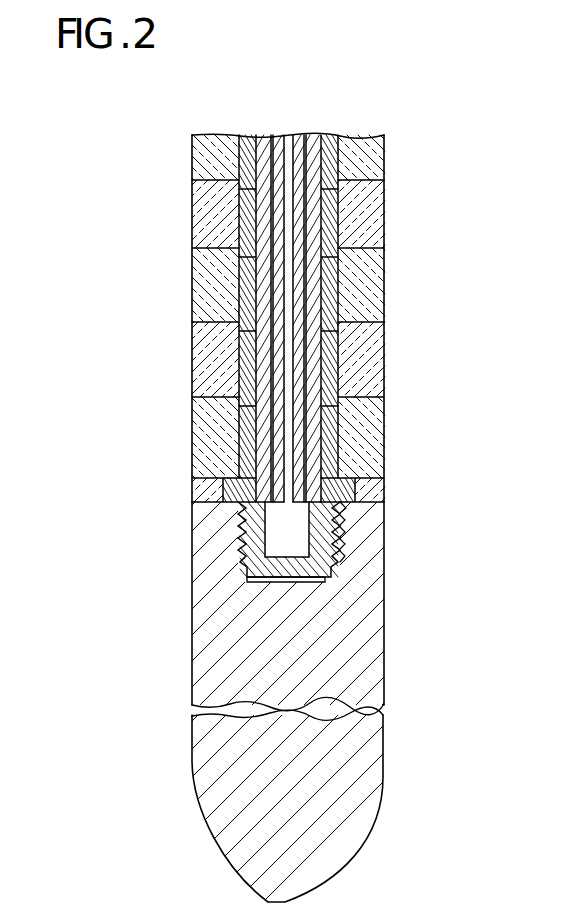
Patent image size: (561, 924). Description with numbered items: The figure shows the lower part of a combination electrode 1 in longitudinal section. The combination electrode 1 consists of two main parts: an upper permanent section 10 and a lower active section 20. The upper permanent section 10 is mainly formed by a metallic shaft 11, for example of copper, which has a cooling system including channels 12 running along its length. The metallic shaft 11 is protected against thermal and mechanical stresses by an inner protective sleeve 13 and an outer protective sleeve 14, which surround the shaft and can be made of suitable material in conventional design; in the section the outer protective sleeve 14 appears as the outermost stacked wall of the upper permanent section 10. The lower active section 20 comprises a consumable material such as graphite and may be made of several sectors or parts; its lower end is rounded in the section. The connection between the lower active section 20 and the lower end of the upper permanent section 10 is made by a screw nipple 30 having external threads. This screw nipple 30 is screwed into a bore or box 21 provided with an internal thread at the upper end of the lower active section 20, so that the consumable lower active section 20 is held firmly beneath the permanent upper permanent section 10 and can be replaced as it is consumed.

The combination electrode 1 is at (448, 371).
The upper permanent section 10 is at (386, 264).
The metallic shaft 11 is at (302, 137).
The channels 12 is at (270, 137).
The inner protective sleeve 13 is at (330, 138).
The outer protective sleeve 14 is at (192, 293).
The lower active section 20 is at (385, 655).
The bore or box 21 is at (332, 553).
The screw nipple 30 is at (243, 537).